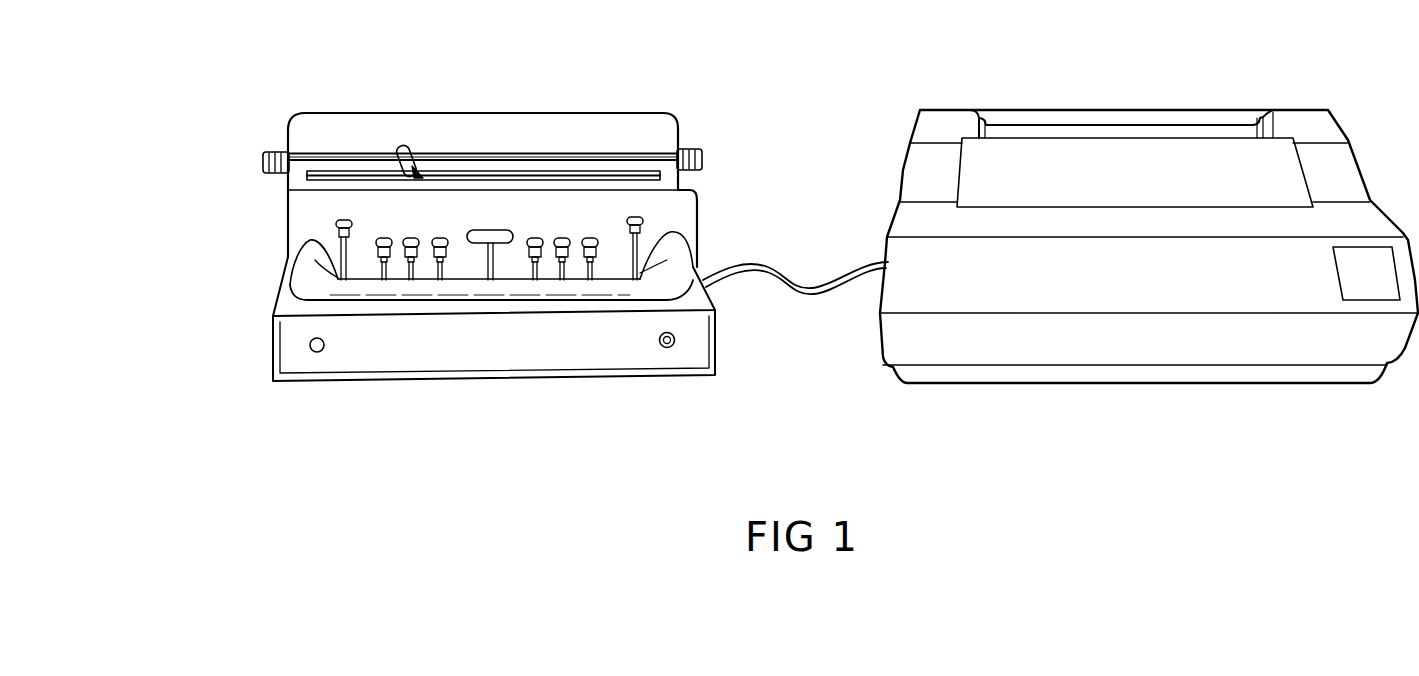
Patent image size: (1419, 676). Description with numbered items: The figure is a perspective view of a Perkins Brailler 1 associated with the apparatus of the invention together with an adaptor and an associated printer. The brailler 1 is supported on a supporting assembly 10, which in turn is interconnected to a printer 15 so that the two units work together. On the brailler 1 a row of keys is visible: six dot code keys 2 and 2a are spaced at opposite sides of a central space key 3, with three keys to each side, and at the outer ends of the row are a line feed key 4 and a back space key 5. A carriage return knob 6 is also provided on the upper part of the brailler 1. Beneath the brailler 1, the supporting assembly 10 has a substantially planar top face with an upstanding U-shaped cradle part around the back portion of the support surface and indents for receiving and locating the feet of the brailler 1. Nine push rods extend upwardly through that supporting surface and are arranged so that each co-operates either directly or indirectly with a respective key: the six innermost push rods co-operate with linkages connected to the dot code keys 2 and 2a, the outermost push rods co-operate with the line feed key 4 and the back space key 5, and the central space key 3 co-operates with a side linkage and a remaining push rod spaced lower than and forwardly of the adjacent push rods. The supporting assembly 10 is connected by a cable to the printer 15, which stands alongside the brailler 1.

The Perkins Brailler 1 is at (600, 140).
The dot code keys 2 is at (589, 238).
The dot code keys 2a is at (385, 238).
The space key 3 is at (493, 229).
The line feed key 4 is at (643, 224).
The back space key 5 is at (336, 224).
The carriage return knob 6 is at (400, 150).
The supporting assembly 10 is at (668, 348).
The printer 15 is at (1115, 128).